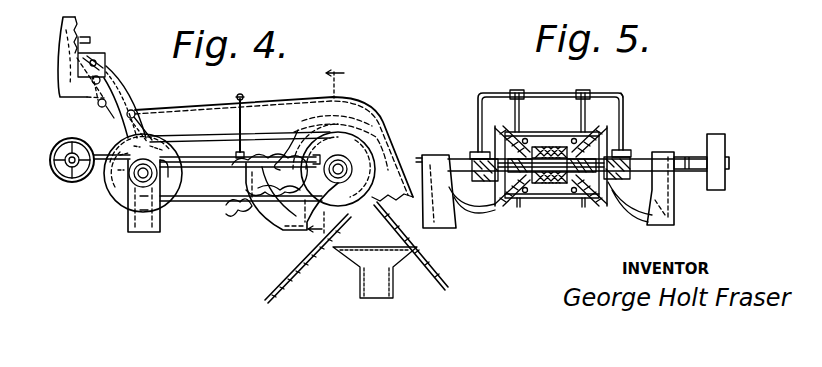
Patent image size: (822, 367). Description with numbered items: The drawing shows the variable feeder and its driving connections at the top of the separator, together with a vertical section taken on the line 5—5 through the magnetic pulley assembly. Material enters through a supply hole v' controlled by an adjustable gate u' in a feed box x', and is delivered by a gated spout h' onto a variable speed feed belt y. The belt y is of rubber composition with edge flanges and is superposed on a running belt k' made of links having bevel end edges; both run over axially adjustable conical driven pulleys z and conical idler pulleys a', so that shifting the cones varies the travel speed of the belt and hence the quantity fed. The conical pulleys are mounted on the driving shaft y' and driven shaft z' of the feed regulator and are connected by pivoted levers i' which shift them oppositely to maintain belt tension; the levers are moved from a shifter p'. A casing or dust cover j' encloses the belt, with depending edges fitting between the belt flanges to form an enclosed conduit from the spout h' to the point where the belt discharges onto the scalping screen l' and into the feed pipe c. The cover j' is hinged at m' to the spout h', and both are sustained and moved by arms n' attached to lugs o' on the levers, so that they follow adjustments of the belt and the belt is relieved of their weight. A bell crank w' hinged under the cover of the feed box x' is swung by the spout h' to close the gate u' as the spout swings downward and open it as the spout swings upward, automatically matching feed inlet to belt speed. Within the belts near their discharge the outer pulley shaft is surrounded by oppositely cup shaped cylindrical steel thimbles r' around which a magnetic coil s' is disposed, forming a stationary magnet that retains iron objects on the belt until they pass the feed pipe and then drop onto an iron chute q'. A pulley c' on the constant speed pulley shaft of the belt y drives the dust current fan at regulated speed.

In FIG. 4, the supply hole v' is at (64, 57).
In FIG. 4, the adjustable gate u' is at (93, 44).
In FIG. 4, the feed box x' is at (101, 49).
In FIG. 4, the bell crank w' is at (117, 81).
In FIG. 4, the gated spout h' is at (130, 102).
In FIG. 4, the hinge m' is at (158, 115).
In FIG. 4, the casing j' is at (274, 134).
In FIG. 5, the casing j' is at (550, 106).
In FIG. 4, the arms n' is at (249, 126).
In FIG. 5, the arms n' is at (637, 88).
In FIG. 4, the shifter p' is at (77, 158).
In FIG. 4, the conical driven pulleys z is at (139, 183).
In FIG. 4, the driving shaft y' is at (240, 161).
In FIG. 5, the driving shaft y' is at (690, 143).
In FIG. 4, the pivoted levers i' is at (240, 172).
In FIG. 4, the variable speed feed belt y is at (241, 211).
In FIG. 5, the variable speed feed belt y is at (577, 192).
In FIG. 4, the magnetic coil s' is at (291, 140).
In FIG. 5, the magnetic coil s' is at (552, 184).
In FIG. 4, the conical idler pulleys a' is at (300, 177).
In FIG. 5, the conical idler pulleys a' is at (534, 193).
In FIG. 4, the feed pipe c is at (375, 272).
In FIG. 4, the iron chute q' is at (308, 258).
In FIG. 4, the scalping screen l' is at (417, 246).
In FIG. 4, the section line 5 is at (331, 146).
In FIG. 5, the lugs o' is at (547, 146).
In FIG. 5, the cylindrical steel thimbles r' is at (551, 176).
In FIG. 5, the running belt k' is at (554, 192).
In FIG. 5, the driven shaft z' is at (660, 172).
In FIG. 5, the pulley c' is at (718, 147).